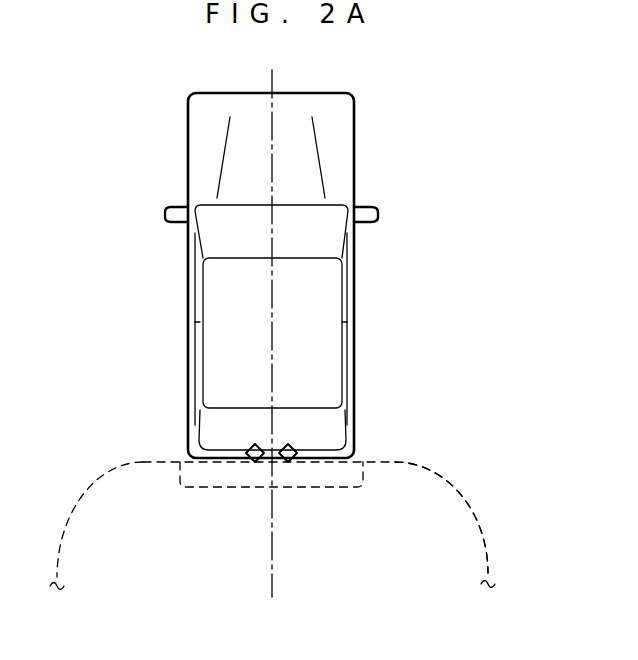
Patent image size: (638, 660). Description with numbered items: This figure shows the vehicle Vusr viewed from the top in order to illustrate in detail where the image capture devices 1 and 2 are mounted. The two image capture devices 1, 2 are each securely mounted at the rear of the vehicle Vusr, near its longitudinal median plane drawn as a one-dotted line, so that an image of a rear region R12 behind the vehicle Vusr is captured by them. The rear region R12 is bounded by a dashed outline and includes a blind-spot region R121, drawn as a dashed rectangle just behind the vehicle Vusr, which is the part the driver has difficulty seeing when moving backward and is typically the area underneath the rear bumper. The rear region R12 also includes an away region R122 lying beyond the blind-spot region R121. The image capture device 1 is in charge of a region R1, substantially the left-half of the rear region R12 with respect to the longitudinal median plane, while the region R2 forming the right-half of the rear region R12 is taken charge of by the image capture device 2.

The vehicle Vusr is at (355, 372).
The image capture device 1 is at (297, 455).
The image capture device 2 is at (247, 452).
The rear region R12 is at (447, 472).
The region R1 is at (118, 562).
The region R2 is at (425, 562).
The blind-spot region R121 is at (197, 490).
The away region R122 is at (488, 497).